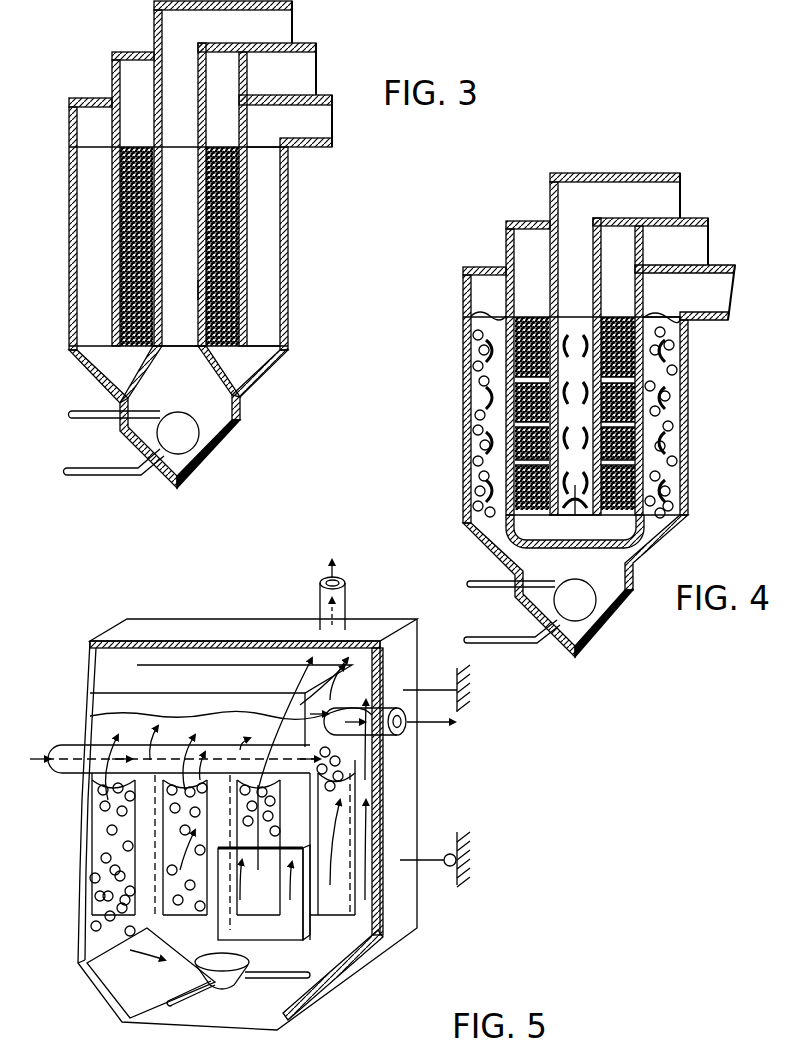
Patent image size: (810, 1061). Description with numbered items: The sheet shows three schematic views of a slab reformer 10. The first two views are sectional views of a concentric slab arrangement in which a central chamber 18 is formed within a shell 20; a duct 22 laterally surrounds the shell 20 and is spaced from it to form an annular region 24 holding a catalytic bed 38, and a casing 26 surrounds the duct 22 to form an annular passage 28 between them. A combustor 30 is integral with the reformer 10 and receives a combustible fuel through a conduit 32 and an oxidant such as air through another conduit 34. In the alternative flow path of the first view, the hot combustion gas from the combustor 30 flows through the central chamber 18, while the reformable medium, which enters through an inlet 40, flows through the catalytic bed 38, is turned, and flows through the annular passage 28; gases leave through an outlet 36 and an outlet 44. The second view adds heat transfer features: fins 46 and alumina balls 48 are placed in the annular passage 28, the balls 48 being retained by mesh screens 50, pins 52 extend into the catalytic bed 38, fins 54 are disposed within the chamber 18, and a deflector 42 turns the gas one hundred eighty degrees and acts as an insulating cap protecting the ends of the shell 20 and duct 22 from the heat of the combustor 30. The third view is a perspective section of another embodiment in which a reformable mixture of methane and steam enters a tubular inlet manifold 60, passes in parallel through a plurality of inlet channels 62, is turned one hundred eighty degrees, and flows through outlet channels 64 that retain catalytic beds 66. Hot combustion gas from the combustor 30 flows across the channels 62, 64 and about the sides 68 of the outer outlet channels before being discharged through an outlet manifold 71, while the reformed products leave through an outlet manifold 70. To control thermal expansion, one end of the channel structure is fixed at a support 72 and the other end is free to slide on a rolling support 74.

In FIG. 3, the reformer 10 is at (61, 288).
In FIG. 4, the reformer 10 is at (450, 347).
In FIG. 5, the reformer 10 is at (454, 773).
In FIG. 3, the chamber 18 is at (189, 229).
In FIG. 4, the chamber 18 is at (608, 537).
In FIG. 3, the shell 20 is at (198, 290).
In FIG. 4, the shell 20 is at (553, 517).
In FIG. 3, the duct 22 is at (245, 328).
In FIG. 4, the duct 22 is at (633, 405).
In FIG. 3, the annular region 24 is at (225, 197).
In FIG. 4, the annular region 24 is at (630, 305).
In FIG. 3, the casing 26 is at (288, 303).
In FIG. 4, the casing 26 is at (687, 460).
In FIG. 3, the annular passage 28 is at (276, 257).
In FIG. 4, the annular passage 28 is at (683, 345).
In FIG. 3, the combustor 30 is at (187, 442).
In FIG. 4, the combustor 30 is at (582, 610).
In FIG. 5, the combustor 30 is at (223, 986).
In FIG. 3, the conduit 32 is at (88, 415).
In FIG. 4, the conduit 32 is at (472, 585).
In FIG. 3, the conduit 34 is at (102, 475).
In FIG. 4, the conduit 34 is at (505, 643).
In FIG. 3, the outlet 36 is at (313, 126).
In FIG. 4, the outlet 36 is at (722, 296).
In FIG. 3, the catalytic bed 38 is at (225, 165).
In FIG. 4, the catalytic bed 38 is at (540, 305).
In FIG. 3, the inlet 40 is at (298, 72).
In FIG. 4, the inlet 40 is at (700, 250).
In FIG. 4, the deflector 42 is at (585, 552).
In FIG. 3, the outlet 44 is at (280, 25).
In FIG. 4, the outlet 44 is at (672, 200).
In FIG. 4, the fins 46 is at (653, 380).
In FIG. 4, the alumina balls 48 is at (470, 440).
In FIG. 4, the mesh screens 50 is at (653, 317).
In FIG. 4, the pins 52 is at (508, 315).
In FIG. 4, the fins 54 is at (580, 337).
In FIG. 5, the inlet manifold 60 is at (75, 748).
In FIG. 5, the inlet channels 62 is at (146, 872).
In FIG. 5, the outlet channels 64 is at (122, 861).
In FIG. 5, the catalytic beds 66 is at (123, 933).
In FIG. 5, the sides 68 is at (90, 818).
In FIG. 5, the outlet manifold 70 is at (388, 740).
In FIG. 5, the outlet manifold 71 is at (320, 603).
In FIG. 5, the support 72 is at (430, 690).
In FIG. 5, the rolling support 74 is at (448, 870).